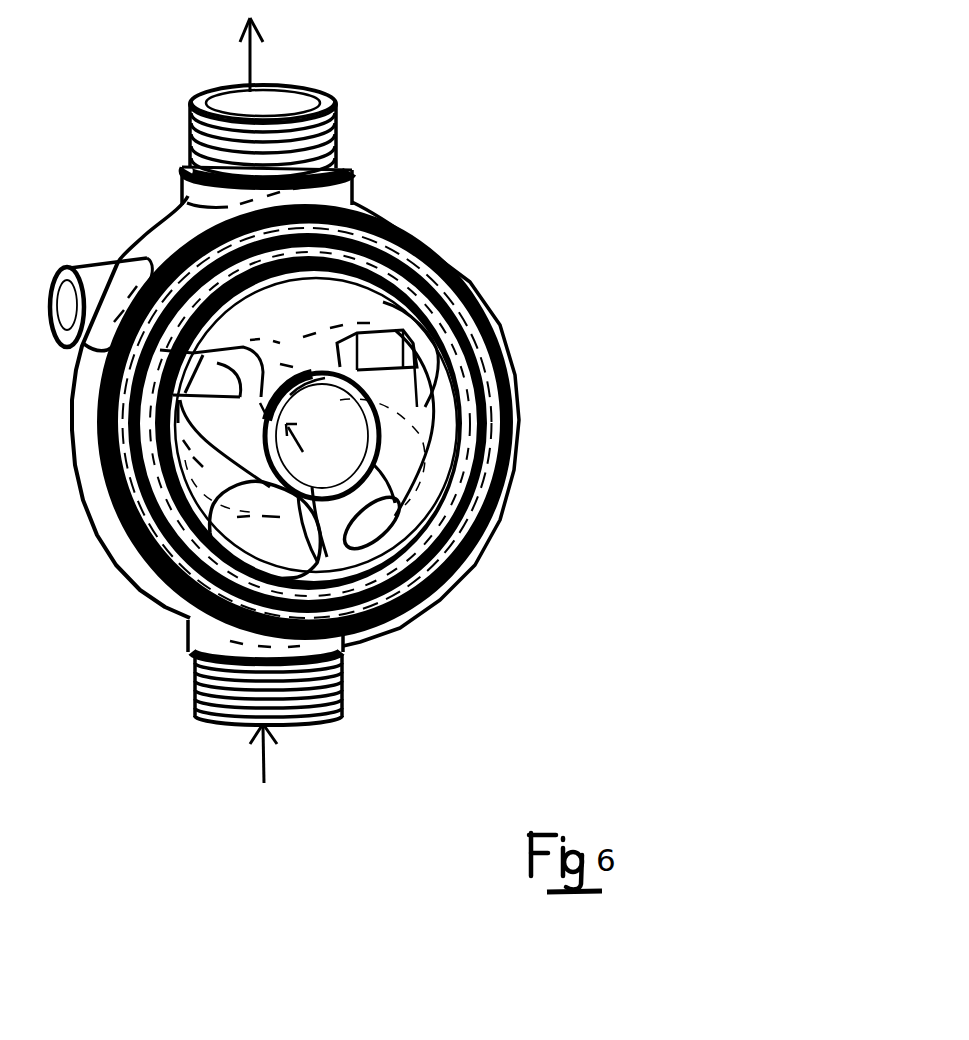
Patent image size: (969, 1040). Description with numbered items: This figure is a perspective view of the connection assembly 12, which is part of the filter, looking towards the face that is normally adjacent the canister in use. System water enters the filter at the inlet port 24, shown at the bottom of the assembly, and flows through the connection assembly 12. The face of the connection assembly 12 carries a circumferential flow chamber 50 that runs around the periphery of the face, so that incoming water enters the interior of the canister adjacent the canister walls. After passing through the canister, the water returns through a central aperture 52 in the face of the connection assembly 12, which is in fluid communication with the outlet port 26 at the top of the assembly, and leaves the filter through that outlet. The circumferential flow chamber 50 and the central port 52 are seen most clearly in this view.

The connection assembly 12 is at (566, 421).
The inlet port 24 is at (342, 697).
The outlet port 26 is at (318, 92).
The circumferential flow chamber 50 is at (428, 480).
The central aperture 52 is at (343, 453).